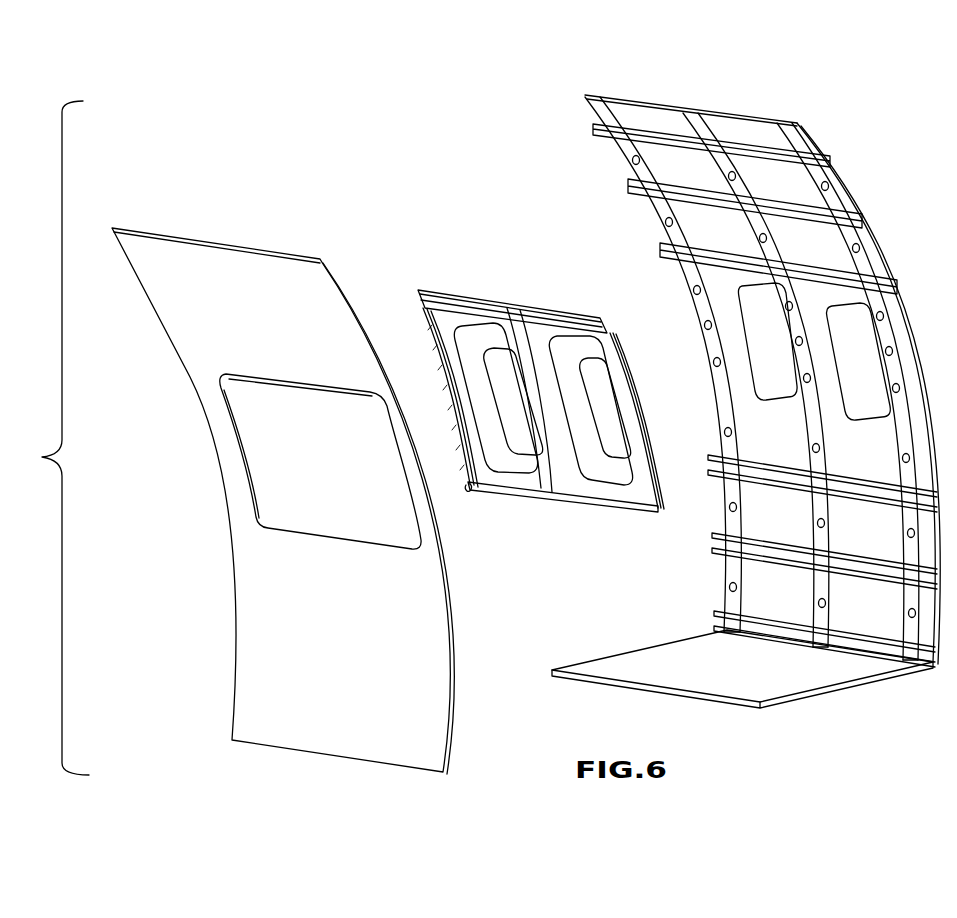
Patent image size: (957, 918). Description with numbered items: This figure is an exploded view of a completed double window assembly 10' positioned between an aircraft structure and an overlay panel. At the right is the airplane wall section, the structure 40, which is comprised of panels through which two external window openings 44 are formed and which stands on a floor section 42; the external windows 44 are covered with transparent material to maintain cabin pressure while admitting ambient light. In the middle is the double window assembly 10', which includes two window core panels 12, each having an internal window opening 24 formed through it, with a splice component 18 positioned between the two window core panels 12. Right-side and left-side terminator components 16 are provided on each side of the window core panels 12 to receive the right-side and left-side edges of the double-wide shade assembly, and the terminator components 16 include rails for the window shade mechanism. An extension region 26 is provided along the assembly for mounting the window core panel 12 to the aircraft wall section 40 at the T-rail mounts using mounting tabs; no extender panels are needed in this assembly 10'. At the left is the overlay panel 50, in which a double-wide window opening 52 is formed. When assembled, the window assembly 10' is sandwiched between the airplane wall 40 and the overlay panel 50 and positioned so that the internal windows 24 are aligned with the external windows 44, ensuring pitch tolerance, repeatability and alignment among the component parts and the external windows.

The double window assembly 10' is at (557, 420).
The window core panel 12 is at (482, 470).
The terminator component 16 is at (653, 490).
The splice component 18 is at (521, 330).
The internal window opening 24 is at (520, 410).
The extension region 26 is at (470, 308).
The aircraft structure 40 is at (762, 381).
The floor section 42 is at (830, 672).
The external window opening 44 is at (783, 366).
The overlay panel 50 is at (307, 501).
The double-wide window opening 52 is at (329, 473).